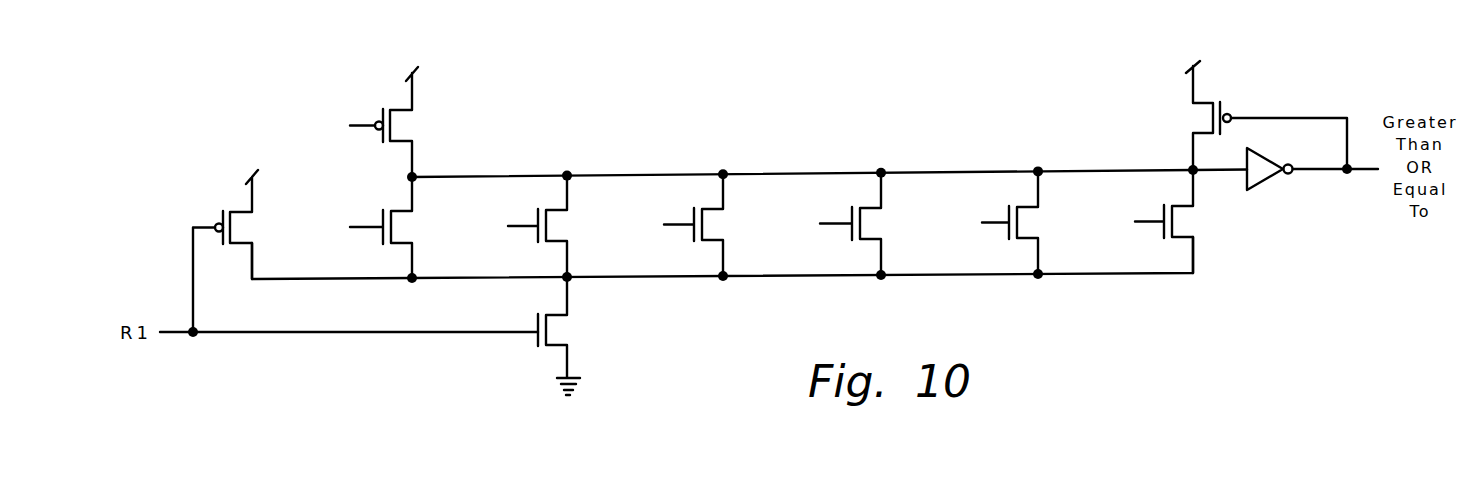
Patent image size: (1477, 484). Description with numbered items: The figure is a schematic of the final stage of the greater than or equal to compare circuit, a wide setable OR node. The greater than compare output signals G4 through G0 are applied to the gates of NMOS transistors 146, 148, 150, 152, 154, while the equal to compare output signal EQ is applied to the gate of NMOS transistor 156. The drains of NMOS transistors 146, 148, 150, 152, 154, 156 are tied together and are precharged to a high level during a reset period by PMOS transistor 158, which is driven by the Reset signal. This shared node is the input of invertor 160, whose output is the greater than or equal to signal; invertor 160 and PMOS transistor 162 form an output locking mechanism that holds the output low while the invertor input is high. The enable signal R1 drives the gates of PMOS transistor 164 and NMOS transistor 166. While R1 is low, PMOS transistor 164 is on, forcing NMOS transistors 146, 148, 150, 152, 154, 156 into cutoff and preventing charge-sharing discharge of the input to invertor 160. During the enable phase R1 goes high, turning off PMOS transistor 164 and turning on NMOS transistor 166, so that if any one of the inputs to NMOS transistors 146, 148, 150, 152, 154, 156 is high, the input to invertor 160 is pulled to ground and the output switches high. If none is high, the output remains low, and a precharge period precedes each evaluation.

The NMOS transistor 146 is at (398, 251).
The NMOS transistor 148 is at (556, 250).
The NMOS transistor 150 is at (711, 249).
The NMOS transistor 152 is at (867, 248).
The NMOS transistor 154 is at (1025, 247).
The NMOS transistor 156 is at (1181, 245).
The PMOS transistor 158 is at (397, 86).
The invertor 160 is at (1272, 177).
The PMOS transistor 162 is at (1211, 82).
The PMOS transistor 164 is at (237, 189).
The NMOS transistor 166 is at (556, 354).